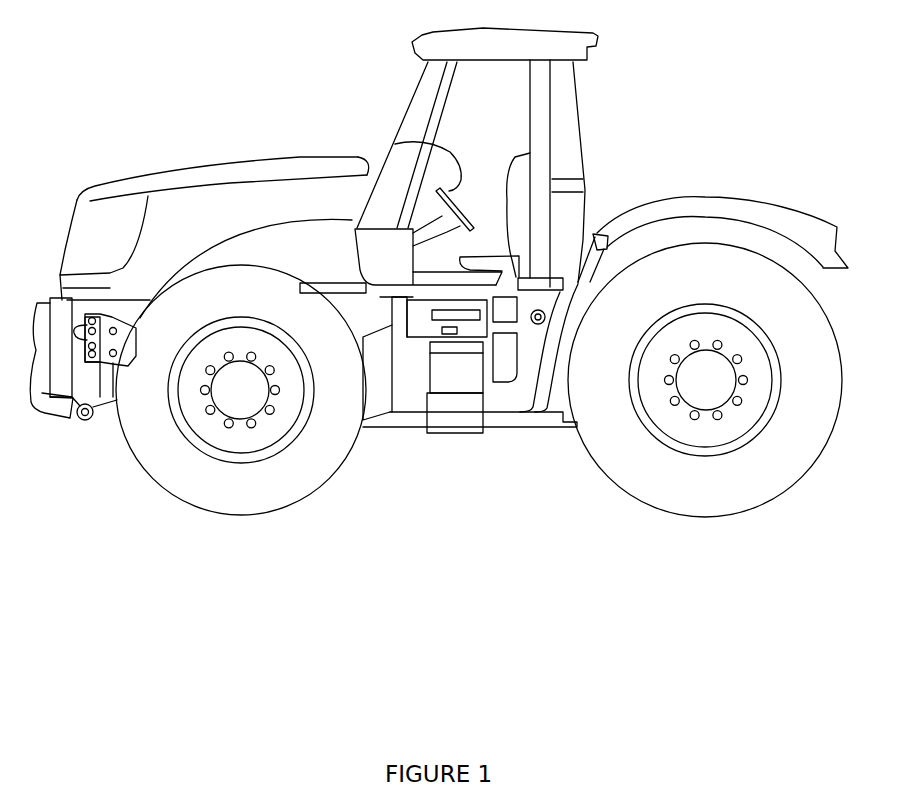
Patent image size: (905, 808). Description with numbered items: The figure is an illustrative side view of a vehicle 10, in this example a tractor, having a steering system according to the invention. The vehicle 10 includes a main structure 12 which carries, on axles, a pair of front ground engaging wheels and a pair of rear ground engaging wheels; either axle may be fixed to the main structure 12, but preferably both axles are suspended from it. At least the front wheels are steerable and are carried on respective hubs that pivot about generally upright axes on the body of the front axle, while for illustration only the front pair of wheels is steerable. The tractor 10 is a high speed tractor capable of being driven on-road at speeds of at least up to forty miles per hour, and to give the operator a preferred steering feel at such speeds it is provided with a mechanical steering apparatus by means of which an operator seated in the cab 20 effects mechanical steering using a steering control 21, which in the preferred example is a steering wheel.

The vehicle 10 is at (660, 125).
The main structure 12 is at (503, 427).
The cab 20 is at (476, 162).
The steering control 21 is at (395, 144).